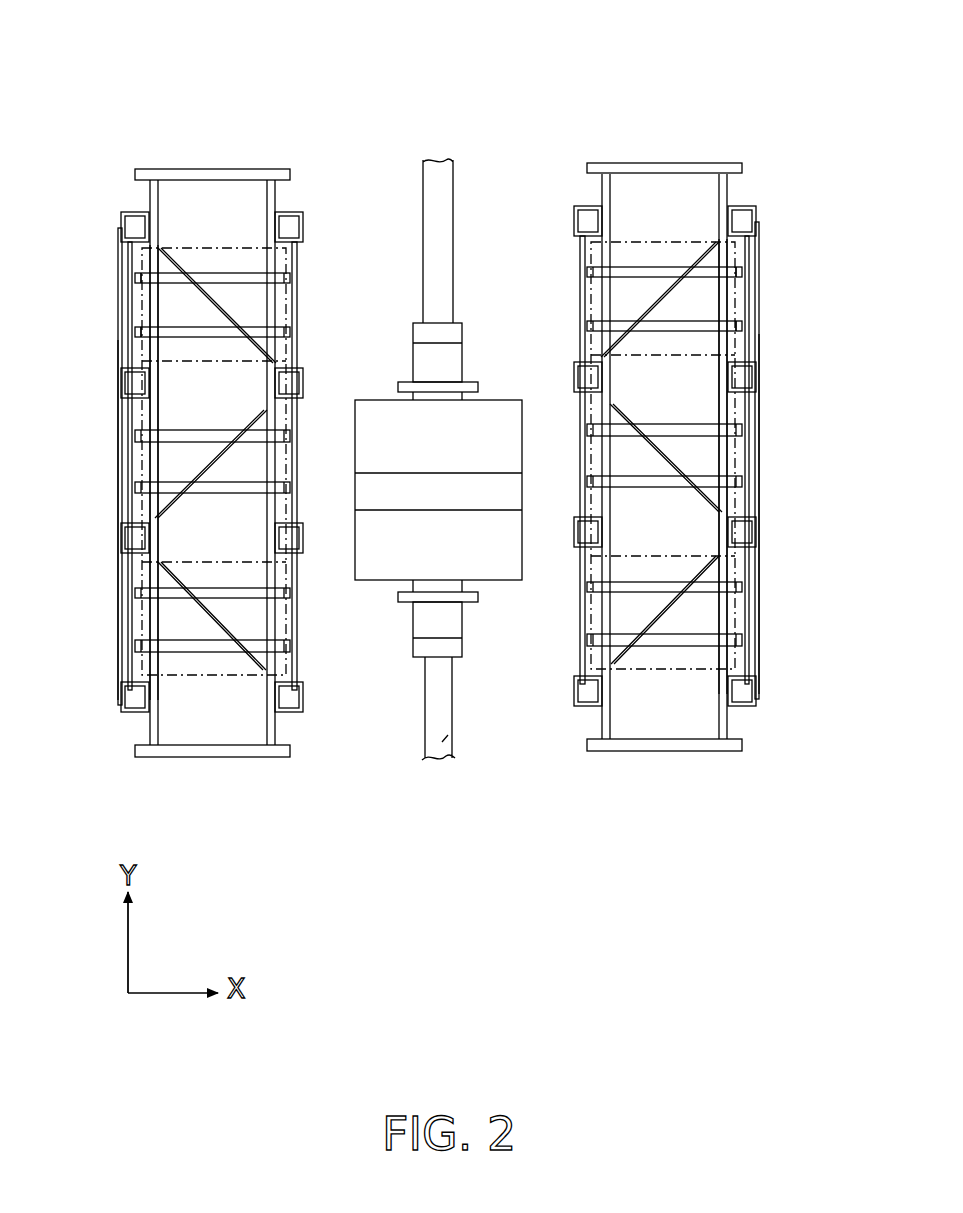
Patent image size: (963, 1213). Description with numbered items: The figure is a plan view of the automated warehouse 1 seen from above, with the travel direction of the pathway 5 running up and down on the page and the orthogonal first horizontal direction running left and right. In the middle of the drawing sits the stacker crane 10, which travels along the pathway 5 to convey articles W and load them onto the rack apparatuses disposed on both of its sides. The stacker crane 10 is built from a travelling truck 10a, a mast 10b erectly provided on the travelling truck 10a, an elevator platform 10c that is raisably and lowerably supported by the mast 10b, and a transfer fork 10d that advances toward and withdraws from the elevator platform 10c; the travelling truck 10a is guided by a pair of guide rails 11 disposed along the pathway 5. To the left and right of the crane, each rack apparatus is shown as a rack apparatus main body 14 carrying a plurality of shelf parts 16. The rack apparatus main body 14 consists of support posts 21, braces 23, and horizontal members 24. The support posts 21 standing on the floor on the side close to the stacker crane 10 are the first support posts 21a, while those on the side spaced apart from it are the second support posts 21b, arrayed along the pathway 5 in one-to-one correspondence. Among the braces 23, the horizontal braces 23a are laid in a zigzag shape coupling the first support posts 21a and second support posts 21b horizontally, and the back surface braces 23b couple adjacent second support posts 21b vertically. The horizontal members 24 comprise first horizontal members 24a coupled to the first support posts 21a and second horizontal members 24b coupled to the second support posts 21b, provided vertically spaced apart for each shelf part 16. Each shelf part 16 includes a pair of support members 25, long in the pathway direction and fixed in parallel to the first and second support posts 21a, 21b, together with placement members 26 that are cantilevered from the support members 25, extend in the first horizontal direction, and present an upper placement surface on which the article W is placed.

The automated warehouse 1 is at (462, 90).
The pathway 5 is at (357, 645).
The stacker crane 10 is at (477, 617).
The travelling truck 10a is at (420, 652).
The mast 10b is at (440, 360).
The elevator platform 10c is at (383, 413).
The transfer fork 10d is at (463, 472).
The guide rails 11 is at (442, 742).
The rack apparatus main body 14 is at (127, 723).
The shelf part 16 is at (212, 162).
The support posts 21 is at (123, 198).
The first support posts 21a is at (288, 208).
The second support posts 21b is at (122, 400).
The braces 23 is at (102, 248).
The horizontal braces 23a is at (250, 658).
The back surface braces 23b is at (120, 353).
The horizontal members 24 is at (125, 620).
The first horizontal members 24a is at (297, 281).
The second horizontal members 24b is at (125, 298).
The support members 25 is at (158, 357).
The placement members 26 is at (160, 335).
The article W is at (213, 243).